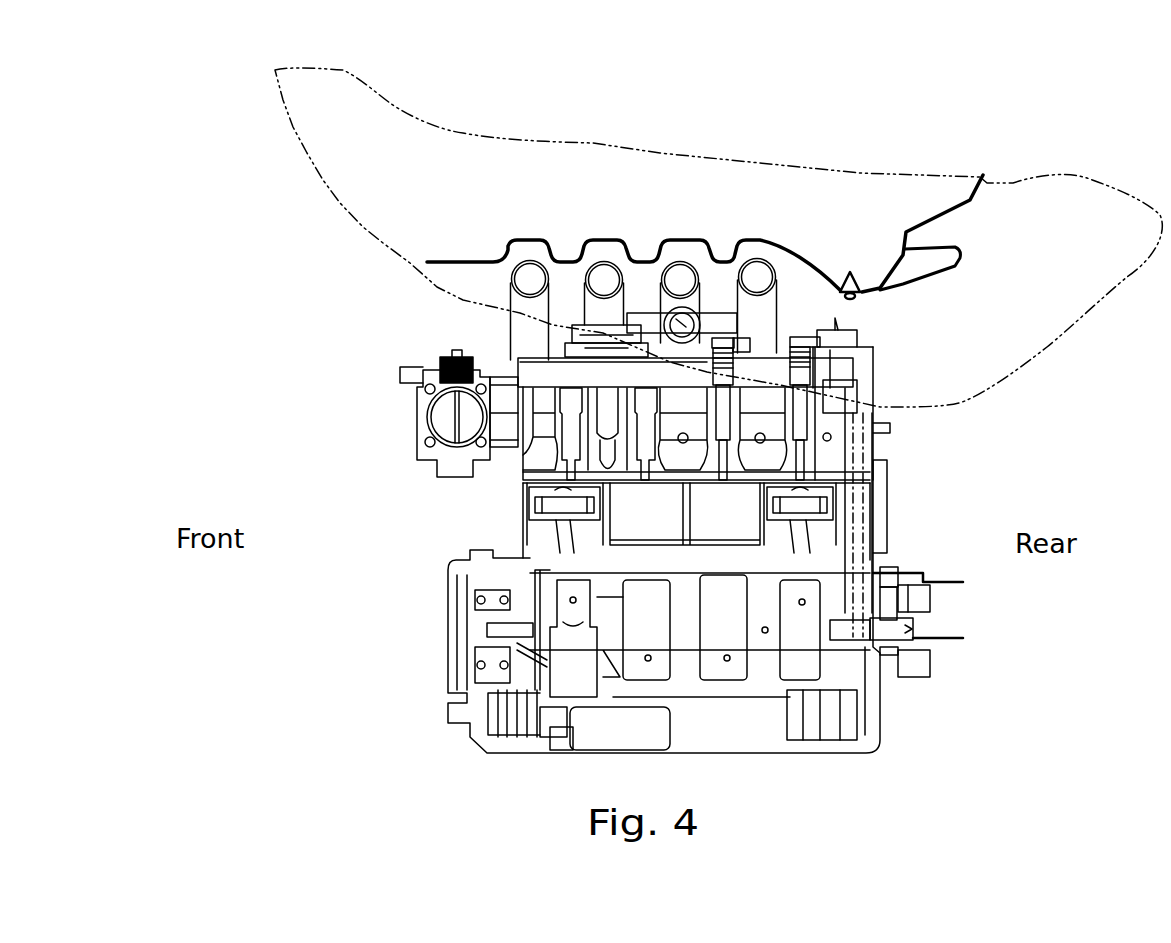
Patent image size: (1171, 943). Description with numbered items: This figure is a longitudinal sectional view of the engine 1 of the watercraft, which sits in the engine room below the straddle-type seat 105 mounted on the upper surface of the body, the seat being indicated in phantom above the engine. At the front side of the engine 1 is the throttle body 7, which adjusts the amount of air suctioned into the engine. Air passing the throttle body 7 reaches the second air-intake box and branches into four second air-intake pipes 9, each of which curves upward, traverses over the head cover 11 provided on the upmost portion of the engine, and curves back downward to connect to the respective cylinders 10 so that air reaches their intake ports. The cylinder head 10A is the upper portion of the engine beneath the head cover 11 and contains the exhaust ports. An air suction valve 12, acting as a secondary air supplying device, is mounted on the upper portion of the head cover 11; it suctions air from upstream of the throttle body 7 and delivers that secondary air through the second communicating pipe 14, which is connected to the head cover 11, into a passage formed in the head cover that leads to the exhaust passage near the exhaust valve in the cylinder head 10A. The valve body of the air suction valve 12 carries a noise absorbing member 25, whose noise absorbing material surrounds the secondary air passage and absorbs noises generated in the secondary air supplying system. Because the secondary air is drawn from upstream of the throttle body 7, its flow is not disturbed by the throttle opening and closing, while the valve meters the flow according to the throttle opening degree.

The engine 1 is at (362, 648).
The throttle body 7 is at (417, 417).
The second air-intake pipes 9 is at (530, 258).
The cylinders 10 is at (530, 540).
The cylinder head 10A is at (530, 465).
The head cover 11 is at (533, 362).
The air suction valve 12 is at (658, 316).
The second communicating pipe 14 is at (615, 240).
The noise absorbing member 25 is at (766, 408).
The seat 105 is at (751, 160).